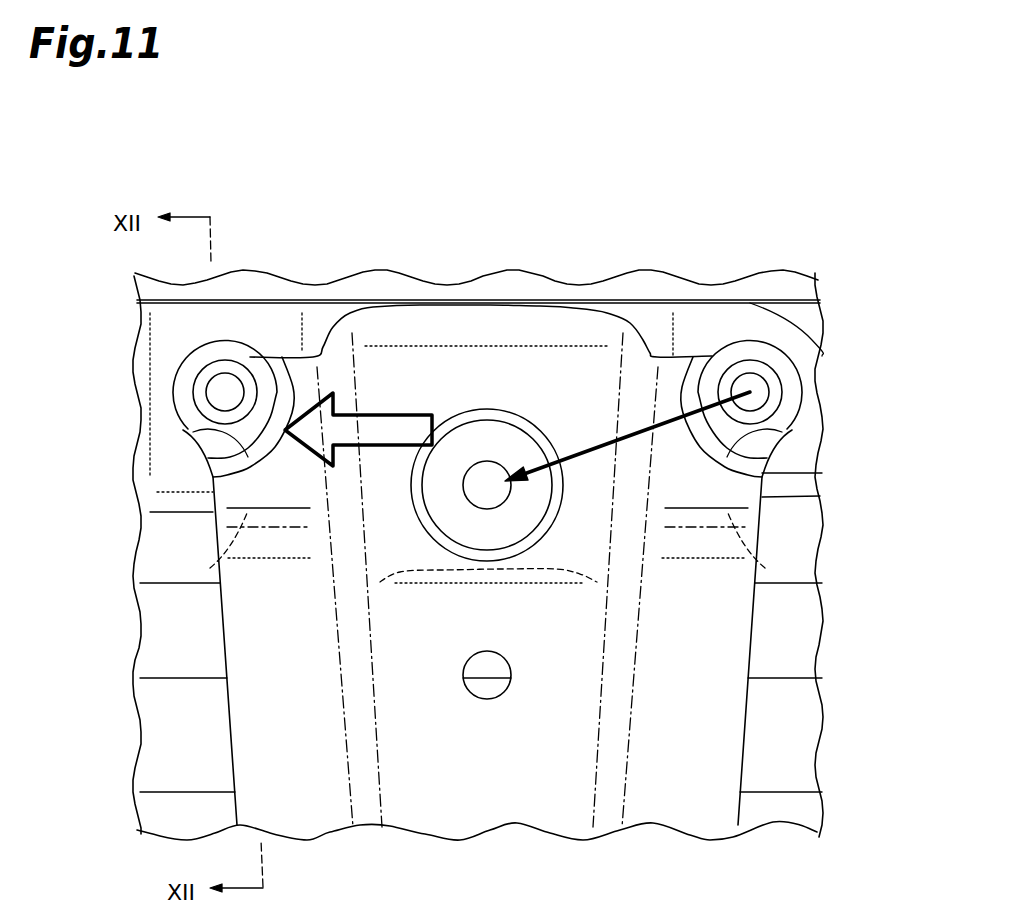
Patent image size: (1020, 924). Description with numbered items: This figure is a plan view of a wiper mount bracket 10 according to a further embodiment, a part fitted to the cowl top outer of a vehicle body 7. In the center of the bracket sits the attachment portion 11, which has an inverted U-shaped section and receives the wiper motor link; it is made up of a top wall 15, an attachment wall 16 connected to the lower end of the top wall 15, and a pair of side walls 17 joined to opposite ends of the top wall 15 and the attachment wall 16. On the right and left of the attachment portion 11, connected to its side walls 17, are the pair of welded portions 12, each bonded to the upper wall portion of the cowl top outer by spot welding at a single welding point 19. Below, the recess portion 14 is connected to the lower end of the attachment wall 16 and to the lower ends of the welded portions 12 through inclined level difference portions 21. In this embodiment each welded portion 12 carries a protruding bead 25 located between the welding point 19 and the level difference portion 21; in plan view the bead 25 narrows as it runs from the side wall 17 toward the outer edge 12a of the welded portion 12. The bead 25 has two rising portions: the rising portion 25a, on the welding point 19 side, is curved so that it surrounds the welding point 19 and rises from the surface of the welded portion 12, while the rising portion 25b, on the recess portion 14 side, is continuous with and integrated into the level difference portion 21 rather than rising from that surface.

The vehicle body 7 is at (797, 270).
The wiper mount bracket 10 is at (393, 297).
The attachment portion 11 is at (510, 300).
The welded portion 12 is at (253, 357).
The outer edge 12a is at (150, 513).
The recess portion 14 is at (317, 820).
The top wall 15 is at (452, 323).
The attachment wall 16 is at (563, 362).
The side wall 17 is at (337, 348).
The welding point 19 is at (217, 390).
The level difference portion 21 is at (283, 545).
The bead 25 is at (295, 480).
The rising portion 25a is at (193, 432).
The rising portion 25b is at (213, 561).